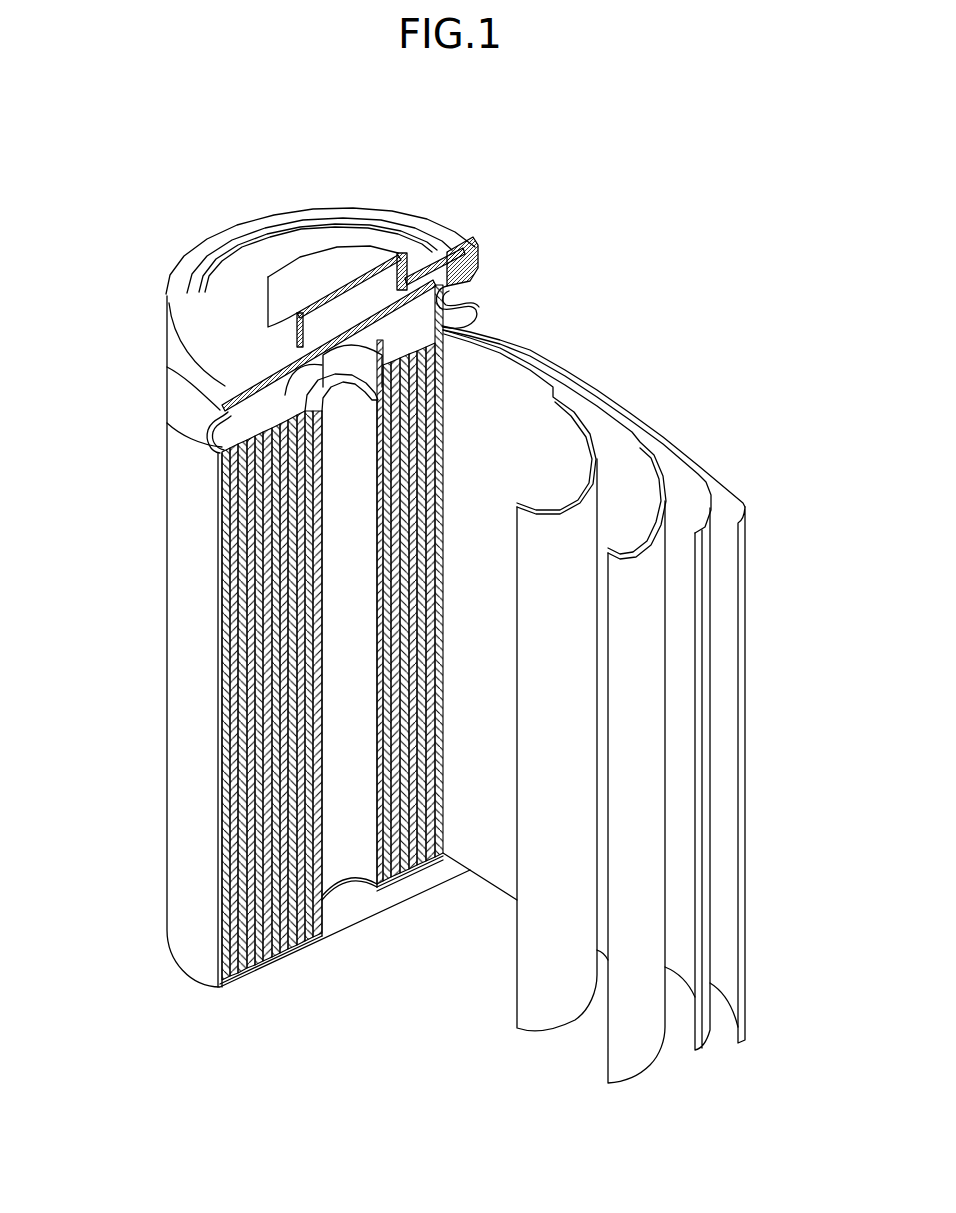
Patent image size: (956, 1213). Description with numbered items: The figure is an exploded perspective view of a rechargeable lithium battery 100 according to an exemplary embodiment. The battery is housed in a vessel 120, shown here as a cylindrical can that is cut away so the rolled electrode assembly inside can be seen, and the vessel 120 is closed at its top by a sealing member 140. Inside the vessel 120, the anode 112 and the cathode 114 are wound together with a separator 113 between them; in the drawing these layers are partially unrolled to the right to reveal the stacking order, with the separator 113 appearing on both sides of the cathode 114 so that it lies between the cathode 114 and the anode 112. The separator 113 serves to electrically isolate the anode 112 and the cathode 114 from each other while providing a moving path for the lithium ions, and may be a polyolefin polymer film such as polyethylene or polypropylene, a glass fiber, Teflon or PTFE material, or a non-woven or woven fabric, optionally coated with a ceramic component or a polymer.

The rechargeable lithium battery 100 is at (538, 189).
The anode 112 is at (743, 508).
The separator 113 is at (553, 400).
The cathode 114 is at (632, 455).
The vessel 120 is at (178, 603).
The sealing member 140 is at (290, 272).